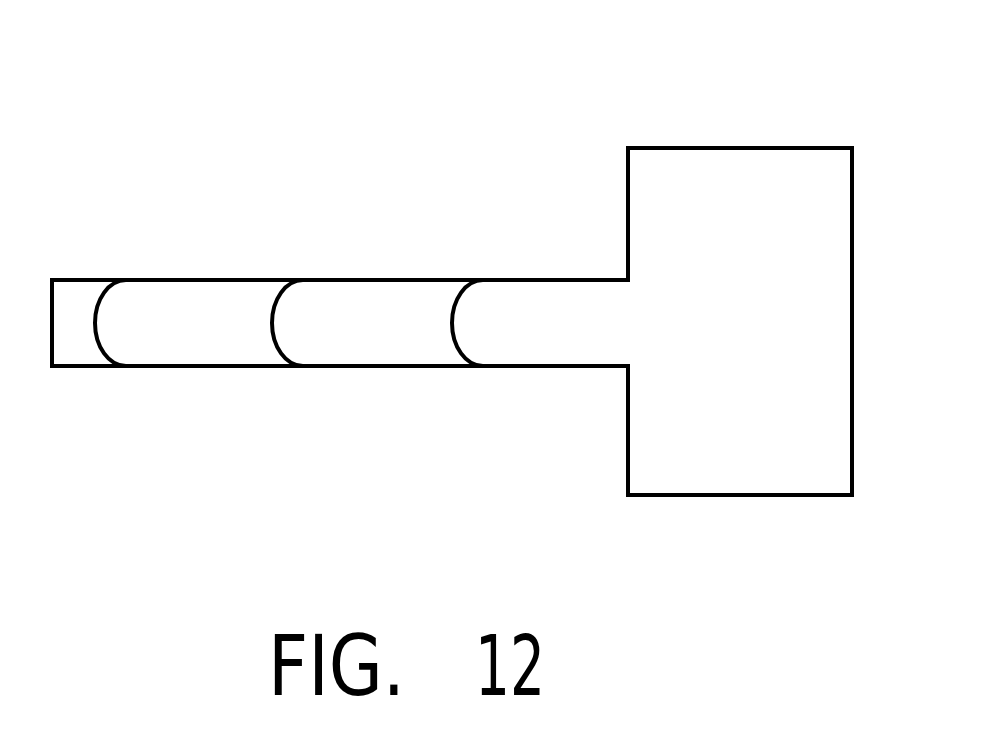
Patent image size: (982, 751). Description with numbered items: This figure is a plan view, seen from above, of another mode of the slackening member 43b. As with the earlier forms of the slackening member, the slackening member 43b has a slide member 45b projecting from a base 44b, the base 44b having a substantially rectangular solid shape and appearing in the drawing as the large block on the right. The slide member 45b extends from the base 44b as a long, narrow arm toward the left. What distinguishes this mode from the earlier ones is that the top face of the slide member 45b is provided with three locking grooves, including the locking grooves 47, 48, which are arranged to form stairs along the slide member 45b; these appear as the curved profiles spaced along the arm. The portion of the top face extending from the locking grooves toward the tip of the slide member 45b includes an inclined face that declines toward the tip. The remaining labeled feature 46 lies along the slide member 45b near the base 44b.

The slackening member 43b is at (768, 80).
The base 44b is at (747, 457).
The slide member 45b is at (350, 280).
The first curved slit 46 is at (446, 349).
The locking groove 47 is at (260, 353).
The locking groove 48 is at (93, 356).